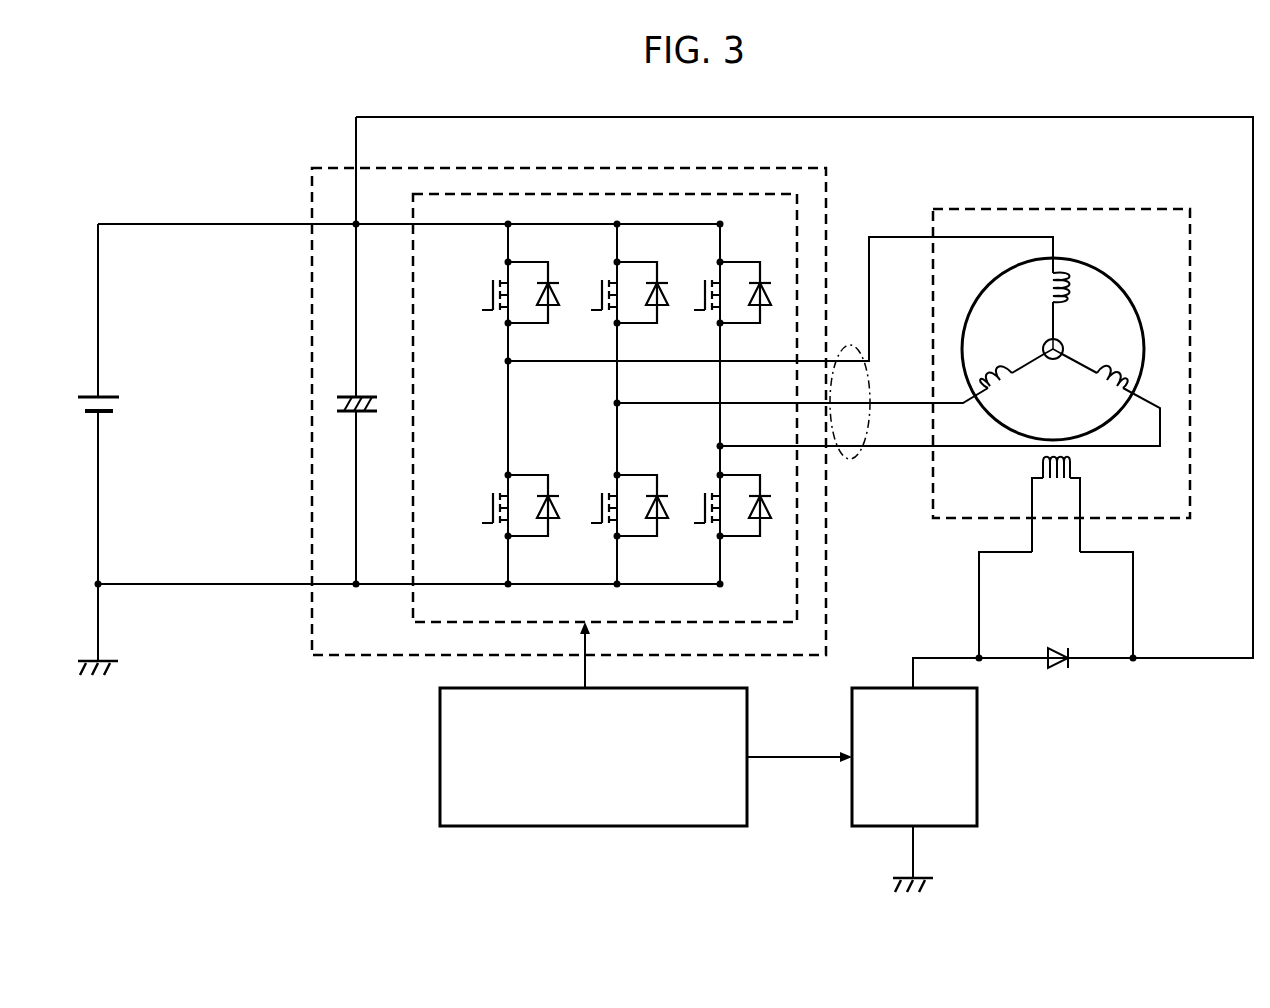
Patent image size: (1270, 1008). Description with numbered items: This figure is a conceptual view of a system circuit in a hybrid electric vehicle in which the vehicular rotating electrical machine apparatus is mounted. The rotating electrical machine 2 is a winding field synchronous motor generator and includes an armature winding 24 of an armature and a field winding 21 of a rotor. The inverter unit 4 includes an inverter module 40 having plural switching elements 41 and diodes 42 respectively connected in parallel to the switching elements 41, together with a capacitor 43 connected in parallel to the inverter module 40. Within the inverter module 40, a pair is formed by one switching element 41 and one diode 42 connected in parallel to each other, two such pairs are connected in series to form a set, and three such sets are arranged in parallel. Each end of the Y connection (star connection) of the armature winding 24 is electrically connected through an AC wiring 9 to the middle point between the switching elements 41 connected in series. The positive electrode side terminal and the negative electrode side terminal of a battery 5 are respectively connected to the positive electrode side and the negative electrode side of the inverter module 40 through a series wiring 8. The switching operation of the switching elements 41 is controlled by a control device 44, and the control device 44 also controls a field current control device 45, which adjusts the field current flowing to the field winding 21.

The rotating electrical machine 2 is at (1072, 347).
The inverter unit 4 is at (828, 196).
The battery 5 is at (122, 409).
The series wiring 8 is at (200, 224).
The AC wiring 9 is at (855, 458).
The field winding 21 is at (1085, 490).
The armature winding 24 is at (1118, 284).
The inverter module 40 is at (605, 373).
The switching element 41 is at (490, 488).
The diode 42 is at (553, 490).
The capacitor 43 is at (372, 415).
The control device 44 is at (440, 752).
The field current control device 45 is at (977, 752).